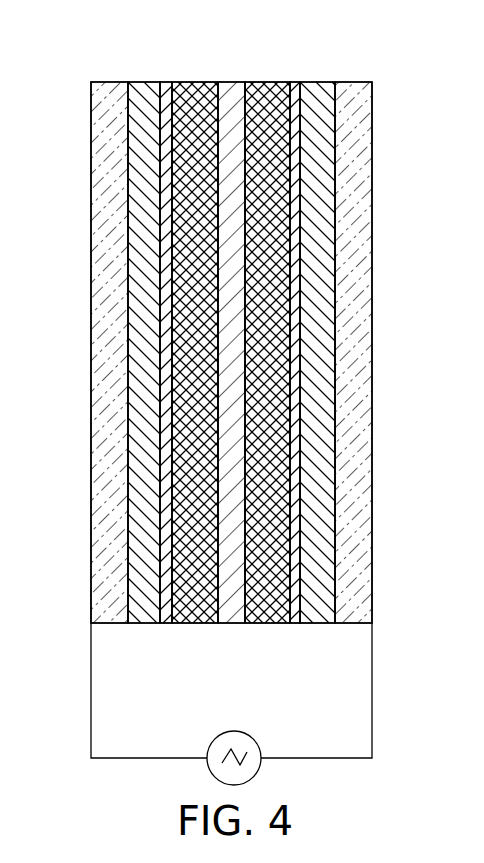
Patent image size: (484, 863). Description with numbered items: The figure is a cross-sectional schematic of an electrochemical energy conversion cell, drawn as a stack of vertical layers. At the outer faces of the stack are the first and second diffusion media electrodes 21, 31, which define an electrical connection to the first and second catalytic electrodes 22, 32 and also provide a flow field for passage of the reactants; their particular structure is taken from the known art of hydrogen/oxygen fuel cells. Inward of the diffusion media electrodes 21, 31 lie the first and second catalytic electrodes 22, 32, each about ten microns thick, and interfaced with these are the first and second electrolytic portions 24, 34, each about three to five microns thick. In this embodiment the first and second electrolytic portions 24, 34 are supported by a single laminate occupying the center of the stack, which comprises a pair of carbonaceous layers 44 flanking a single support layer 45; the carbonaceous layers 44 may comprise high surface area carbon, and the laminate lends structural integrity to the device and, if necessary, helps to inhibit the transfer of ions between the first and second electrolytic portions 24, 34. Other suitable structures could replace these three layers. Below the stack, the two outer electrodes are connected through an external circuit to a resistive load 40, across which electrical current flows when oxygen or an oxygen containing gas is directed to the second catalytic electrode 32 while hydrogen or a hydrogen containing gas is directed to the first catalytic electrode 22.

The first diffusion media electrode 21 is at (373, 99).
The first catalytic electrode 22 is at (322, 82).
The first electrolytic portion 24 is at (295, 82).
The second diffusion media electrode 31 is at (92, 101).
The second catalytic electrode 32 is at (142, 82).
The second electrolytic portion 34 is at (168, 82).
The carbonaceous layers 44 is at (185, 623).
The support layer 45 is at (223, 623).
The resistive load 40 is at (258, 748).